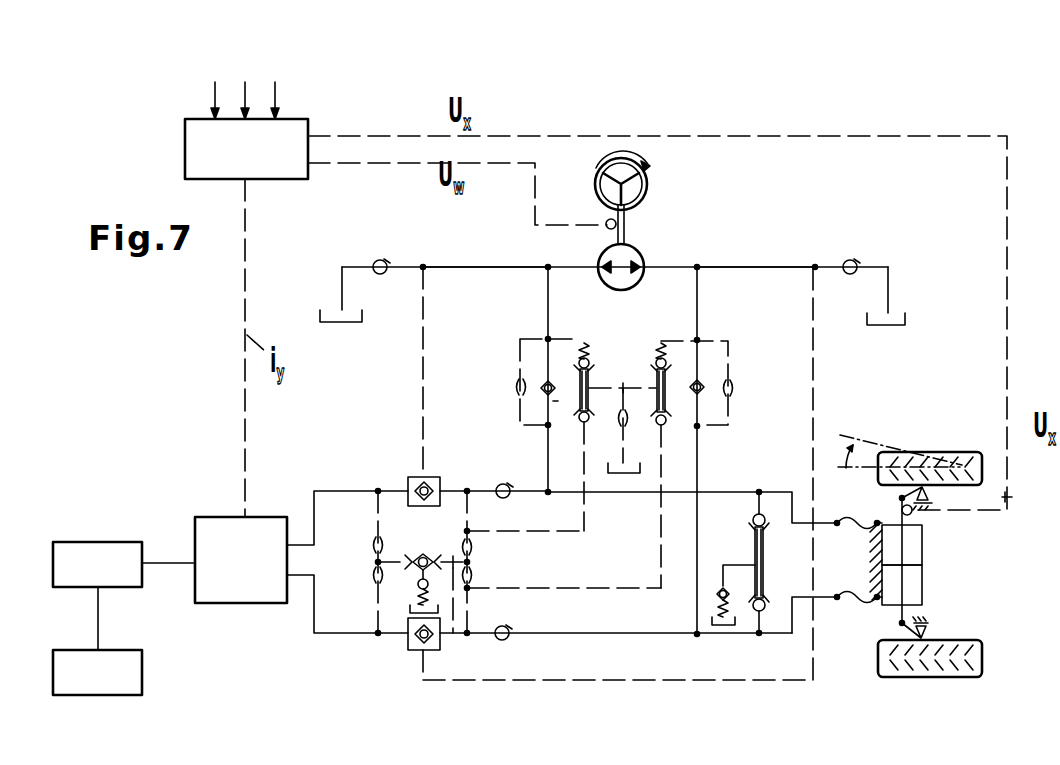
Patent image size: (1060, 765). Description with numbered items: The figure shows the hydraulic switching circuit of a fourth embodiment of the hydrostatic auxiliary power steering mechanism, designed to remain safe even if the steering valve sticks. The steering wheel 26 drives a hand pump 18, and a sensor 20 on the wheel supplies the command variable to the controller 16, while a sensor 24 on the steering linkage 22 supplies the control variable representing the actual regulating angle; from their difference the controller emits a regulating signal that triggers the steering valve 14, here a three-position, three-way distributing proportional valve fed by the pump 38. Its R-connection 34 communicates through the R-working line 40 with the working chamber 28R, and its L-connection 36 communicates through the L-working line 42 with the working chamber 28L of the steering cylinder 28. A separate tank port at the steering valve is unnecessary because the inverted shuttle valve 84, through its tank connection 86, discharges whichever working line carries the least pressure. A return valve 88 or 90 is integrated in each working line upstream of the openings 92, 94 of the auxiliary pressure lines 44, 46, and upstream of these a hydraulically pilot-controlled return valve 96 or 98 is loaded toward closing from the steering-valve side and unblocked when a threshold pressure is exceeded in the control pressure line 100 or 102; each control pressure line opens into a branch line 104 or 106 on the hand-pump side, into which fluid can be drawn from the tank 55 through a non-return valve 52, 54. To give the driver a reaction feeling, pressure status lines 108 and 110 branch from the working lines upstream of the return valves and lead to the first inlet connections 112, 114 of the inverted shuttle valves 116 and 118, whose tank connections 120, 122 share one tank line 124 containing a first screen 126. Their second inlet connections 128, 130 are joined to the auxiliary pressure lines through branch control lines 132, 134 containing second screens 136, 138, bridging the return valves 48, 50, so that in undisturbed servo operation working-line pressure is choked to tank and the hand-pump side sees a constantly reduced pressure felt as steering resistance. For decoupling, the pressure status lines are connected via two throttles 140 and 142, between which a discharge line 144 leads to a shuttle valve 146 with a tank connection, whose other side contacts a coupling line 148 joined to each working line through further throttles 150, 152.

The controller 16 is at (295, 130).
The steering wheel 26 is at (647, 191).
The sensor 20 is at (606, 227).
The hand pump 18 is at (630, 257).
The non-return valve 54 is at (379, 261).
The tank 55 is at (340, 285).
The branch line 106 is at (447, 266).
The auxiliary pressure line 46 is at (545, 270).
The branch line 104 is at (760, 266).
The non-return valve 52 is at (854, 262).
The second inlet connection 130 is at (578, 367).
The inverted shuttle valve 118 is at (578, 382).
The tank connection 122 is at (597, 362).
The tank connection 120 is at (650, 395).
The second inlet connection 128 is at (668, 367).
The branch control line 132 is at (731, 357).
The return valve 48 is at (702, 385).
The second screen 136 is at (734, 387).
The control pressure line 102 is at (423, 347).
The branch control line 134 is at (518, 365).
The second screen 138 is at (514, 387).
The tank line 124 is at (622, 411).
The inverted shuttle valve 116 is at (668, 392).
The return valve 50 is at (546, 391).
The first inlet connection 114 is at (567, 430).
The first inlet connection 112 is at (668, 417).
The auxiliary pressure line 44 is at (699, 300).
The hydraulically pilot-controlled return valve 98 is at (407, 477).
The return valve 90 is at (498, 485).
The opening 94 is at (547, 489).
The pressure status line 110 is at (600, 538).
The first screen 126 is at (605, 440).
The L-working line 42 is at (737, 493).
The tank connection 86 is at (750, 562).
The inverted shuttle valve 84 is at (767, 553).
The steering linkage 22 is at (926, 497).
The sensor 24 is at (913, 512).
The working chamber 28L is at (912, 550).
The steering cylinder 28 is at (931, 556).
The working chamber 28R is at (915, 590).
The pump 38 is at (97, 540).
The steering valve 14 is at (210, 516).
The L-connection 36 is at (298, 540).
The R-connection 34 is at (300, 577).
The throttle 152 is at (373, 543).
The shuttle valve 146 is at (425, 551).
The coupling line 148 is at (376, 562).
The throttle 142 is at (471, 547).
The throttle 140 is at (473, 576).
The throttle 150 is at (372, 578).
The pressure status line 108 is at (563, 592).
The hydraulically pilot-controlled return valve 96 is at (413, 649).
The discharge line 144 is at (469, 621).
The return valve 88 is at (507, 637).
The control pressure line 100 is at (457, 681).
The opening 92 is at (697, 636).
The R-working line 40 is at (779, 636).